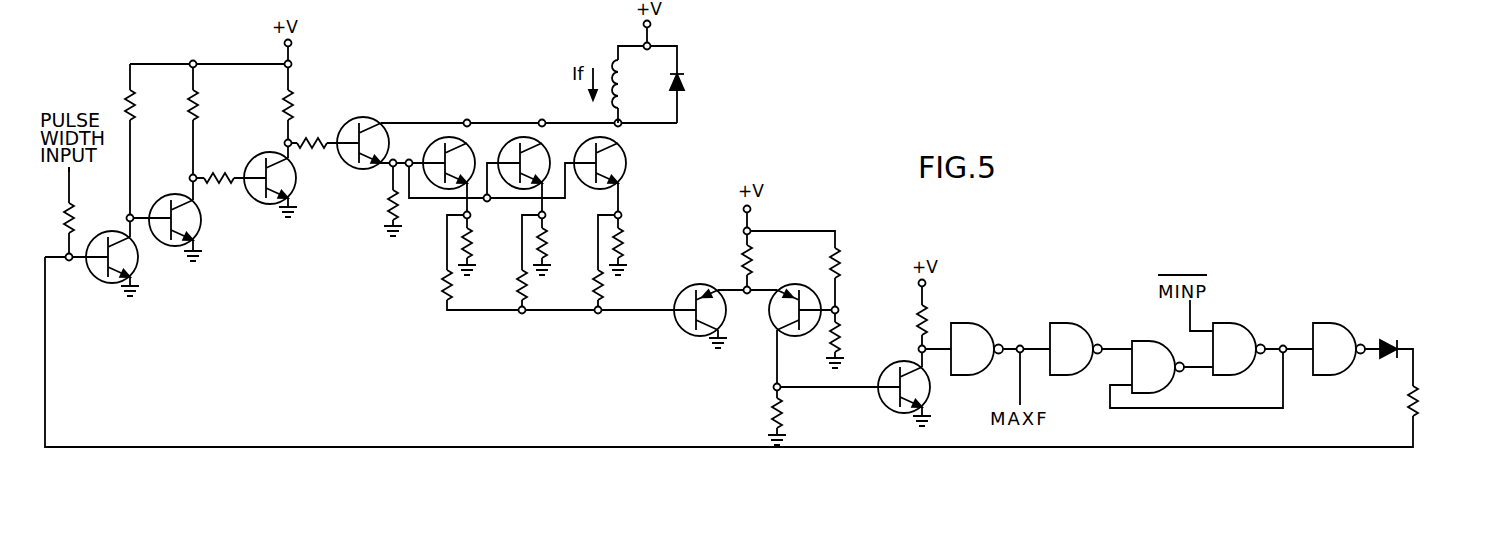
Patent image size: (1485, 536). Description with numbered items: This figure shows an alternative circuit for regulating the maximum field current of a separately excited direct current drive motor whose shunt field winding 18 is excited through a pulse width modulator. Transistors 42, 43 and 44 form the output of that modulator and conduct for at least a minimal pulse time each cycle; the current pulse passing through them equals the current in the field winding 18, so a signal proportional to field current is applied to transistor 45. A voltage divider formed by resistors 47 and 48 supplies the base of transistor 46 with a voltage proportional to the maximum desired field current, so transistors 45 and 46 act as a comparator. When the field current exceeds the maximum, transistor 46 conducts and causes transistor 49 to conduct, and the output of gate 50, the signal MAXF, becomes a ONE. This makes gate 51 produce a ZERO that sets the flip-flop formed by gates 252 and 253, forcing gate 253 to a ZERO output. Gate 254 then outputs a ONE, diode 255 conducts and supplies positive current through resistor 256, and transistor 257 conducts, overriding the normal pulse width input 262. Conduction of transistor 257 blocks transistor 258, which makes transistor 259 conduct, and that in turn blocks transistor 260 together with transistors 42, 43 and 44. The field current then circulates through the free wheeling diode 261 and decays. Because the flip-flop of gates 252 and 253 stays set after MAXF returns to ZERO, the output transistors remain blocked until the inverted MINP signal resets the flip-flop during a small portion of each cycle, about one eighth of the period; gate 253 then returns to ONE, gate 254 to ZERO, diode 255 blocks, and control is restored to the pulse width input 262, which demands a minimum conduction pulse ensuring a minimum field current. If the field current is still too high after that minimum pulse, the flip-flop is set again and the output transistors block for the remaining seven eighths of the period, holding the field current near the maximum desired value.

The shunt field winding 18 is at (615, 80).
The transistor 42 is at (470, 157).
The transistor 43 is at (546, 157).
The transistor 44 is at (623, 157).
The transistor 45 is at (684, 291).
The transistor 46 is at (786, 292).
The resistor 47 is at (832, 258).
The resistor 48 is at (841, 340).
The transistor 49 is at (884, 366).
The gate 50 is at (966, 323).
The gate 51 is at (1066, 323).
The gate 252 is at (1148, 341).
The gate 253 is at (1230, 323).
The gate 254 is at (1332, 323).
The diode 255 is at (1392, 361).
The resistor 256 is at (1408, 394).
The transistor 257 is at (104, 232).
The transistor 258 is at (162, 199).
The transistor 259 is at (252, 158).
The transistor 260 is at (357, 117).
The free wheeling diode 261 is at (700, 74).
The pulse width input 262 is at (70, 170).